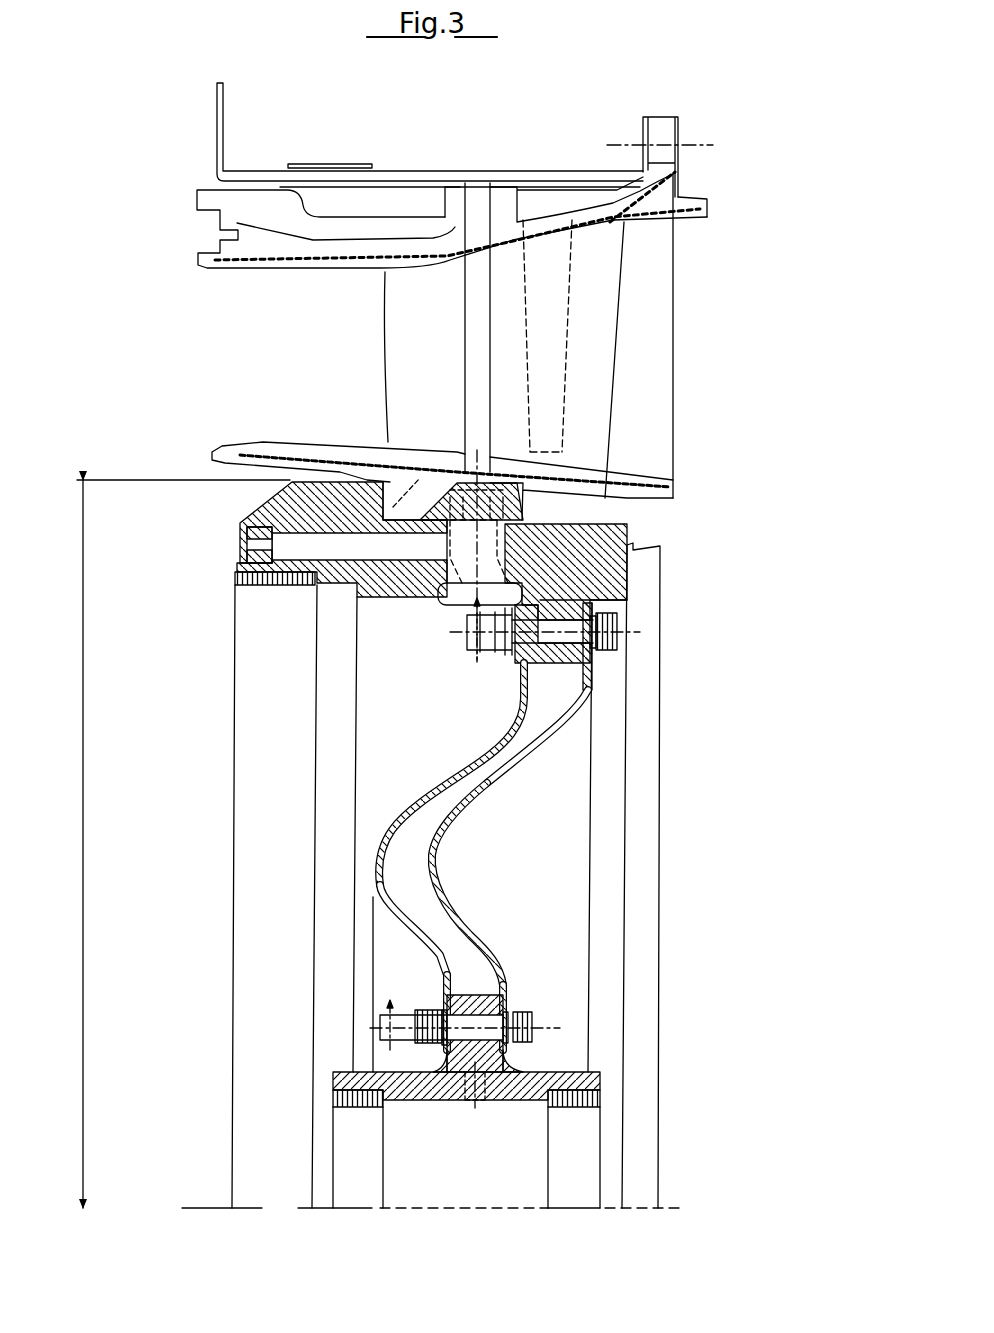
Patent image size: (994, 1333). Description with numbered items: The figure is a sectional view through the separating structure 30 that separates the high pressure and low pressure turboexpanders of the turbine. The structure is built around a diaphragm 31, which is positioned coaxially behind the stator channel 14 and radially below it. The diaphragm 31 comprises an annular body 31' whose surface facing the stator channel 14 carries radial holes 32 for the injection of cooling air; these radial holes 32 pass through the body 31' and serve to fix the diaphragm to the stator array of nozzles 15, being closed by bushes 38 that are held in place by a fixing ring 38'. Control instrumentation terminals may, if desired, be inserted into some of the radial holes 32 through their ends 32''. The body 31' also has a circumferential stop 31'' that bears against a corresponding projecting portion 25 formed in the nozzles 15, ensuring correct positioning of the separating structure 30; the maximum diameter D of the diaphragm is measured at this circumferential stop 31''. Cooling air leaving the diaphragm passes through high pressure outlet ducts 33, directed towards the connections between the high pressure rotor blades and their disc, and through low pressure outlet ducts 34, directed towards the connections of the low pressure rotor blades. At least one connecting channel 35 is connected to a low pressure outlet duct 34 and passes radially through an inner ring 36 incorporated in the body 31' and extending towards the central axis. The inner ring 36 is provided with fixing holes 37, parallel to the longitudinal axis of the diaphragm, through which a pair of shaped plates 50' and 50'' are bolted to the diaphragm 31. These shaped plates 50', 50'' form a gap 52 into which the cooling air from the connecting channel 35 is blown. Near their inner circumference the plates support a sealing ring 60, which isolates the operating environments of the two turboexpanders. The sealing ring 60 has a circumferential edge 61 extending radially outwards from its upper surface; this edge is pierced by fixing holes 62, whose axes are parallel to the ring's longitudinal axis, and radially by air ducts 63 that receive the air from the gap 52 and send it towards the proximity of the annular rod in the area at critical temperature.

The stator channel 14 is at (513, 328).
The stator array of nozzles 15 is at (473, 338).
The projecting portion 25 is at (417, 498).
The separating structure 30 is at (218, 888).
The diaphragm 31 is at (431, 896).
The annular body 31' is at (472, 462).
The circumferential stop 31'' is at (309, 522).
The radial holes 32 is at (468, 603).
The ends of the radial holes 32'' is at (451, 617).
The high pressure outlet ducts 33 is at (287, 585).
The low pressure outlet ducts 34 is at (600, 540).
The connecting channel 35 is at (582, 590).
The inner ring 36 is at (520, 663).
The fixing holes 37 is at (623, 628).
The bushes 38 is at (488, 652).
The fixing ring 38' is at (629, 677).
The shaped plate 50' is at (449, 819).
The shaped plate 50'' is at (510, 837).
The gap 52 is at (407, 863).
The sealing ring 60 is at (570, 1072).
The circumferential edge 61 is at (482, 995).
The fixing holes 62 is at (513, 1020).
The air ducts 63 is at (467, 1068).
The maximum diameter D is at (83, 1137).